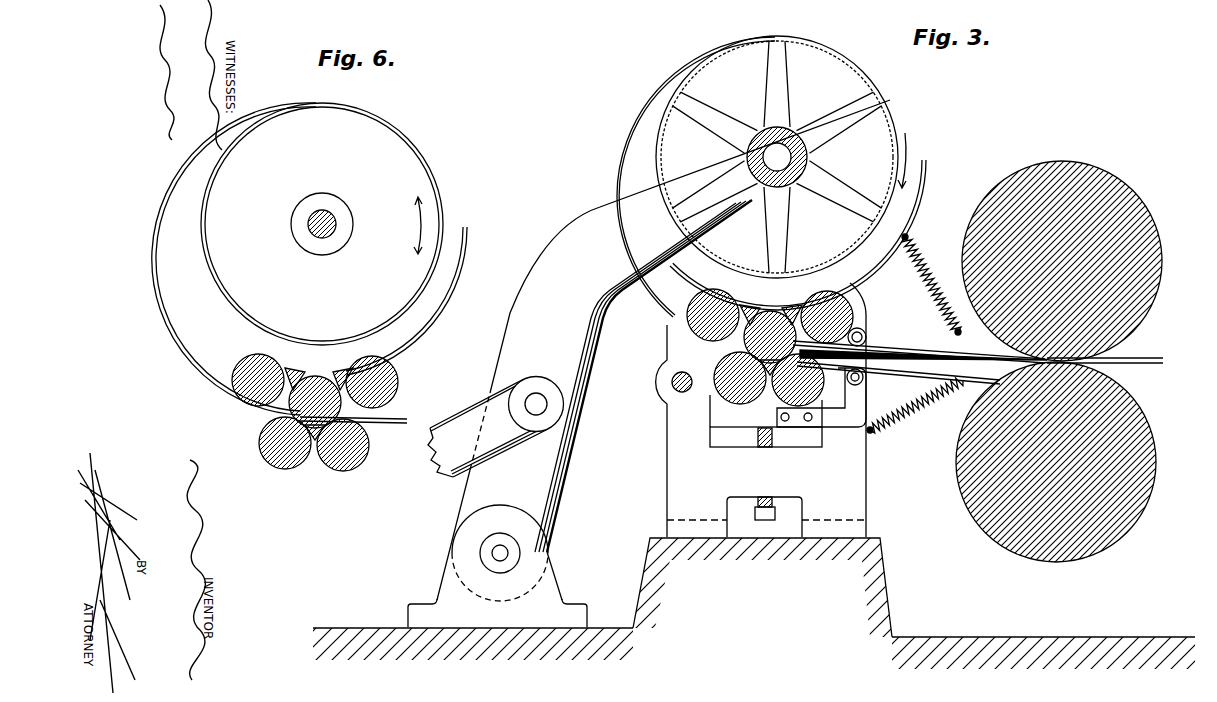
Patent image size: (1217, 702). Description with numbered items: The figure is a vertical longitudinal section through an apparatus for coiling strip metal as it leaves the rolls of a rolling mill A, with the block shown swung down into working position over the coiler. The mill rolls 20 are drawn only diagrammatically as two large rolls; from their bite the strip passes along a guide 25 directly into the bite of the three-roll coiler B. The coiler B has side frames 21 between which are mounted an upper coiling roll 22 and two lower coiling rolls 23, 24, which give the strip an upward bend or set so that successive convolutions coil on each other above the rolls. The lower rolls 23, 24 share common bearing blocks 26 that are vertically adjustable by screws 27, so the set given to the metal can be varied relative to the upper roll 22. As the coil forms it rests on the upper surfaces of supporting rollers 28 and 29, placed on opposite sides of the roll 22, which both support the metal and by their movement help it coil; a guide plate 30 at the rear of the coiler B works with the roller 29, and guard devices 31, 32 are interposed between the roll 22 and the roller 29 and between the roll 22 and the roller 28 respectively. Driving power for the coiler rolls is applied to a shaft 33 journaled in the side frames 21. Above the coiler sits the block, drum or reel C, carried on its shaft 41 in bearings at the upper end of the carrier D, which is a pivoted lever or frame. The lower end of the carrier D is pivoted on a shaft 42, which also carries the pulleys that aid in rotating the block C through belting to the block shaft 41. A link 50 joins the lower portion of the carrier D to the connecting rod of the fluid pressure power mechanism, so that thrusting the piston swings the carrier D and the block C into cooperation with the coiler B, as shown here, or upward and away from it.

In FIG. 3, the rolls 20 is at (1152, 262).
In FIG. 3, the side frames 21 is at (660, 497).
In FIG. 6, the upper coiling roll 22 is at (307, 404).
In FIG. 3, the upper coiling roll 22 is at (757, 338).
In FIG. 6, the lower coiling roll 23 is at (270, 456).
In FIG. 3, the lower coiling roll 23 is at (725, 395).
In FIG. 6, the lower coiling roll 24 is at (357, 462).
In FIG. 3, the lower coiling roll 24 is at (780, 402).
In FIG. 3, the guide 25 is at (882, 344).
In FIG. 3, the bearing blocks 26 is at (733, 420).
In FIG. 3, the adjusting screws 27 is at (752, 504).
In FIG. 6, the supporting roller 28 is at (247, 370).
In FIG. 3, the supporting roller 28 is at (710, 300).
In FIG. 6, the supporting roller 29 is at (383, 373).
In FIG. 3, the supporting roller 29 is at (822, 302).
In FIG. 6, the guide plate 30 is at (466, 272).
In FIG. 3, the guide plate 30 is at (927, 186).
In FIG. 6, the guard device 31 is at (338, 375).
In FIG. 3, the guard device 31 is at (790, 312).
In FIG. 6, the guard device 32 is at (293, 370).
In FIG. 3, the guard device 32 is at (750, 310).
In FIG. 3, the drive shaft 33 is at (672, 382).
In FIG. 6, the block shaft 41 is at (341, 221).
In FIG. 3, the block shaft 41 is at (806, 157).
In FIG. 3, the pivot shaft 42 is at (497, 557).
In FIG. 3, the link 50 is at (452, 453).
In FIG. 3, the rolling mill A is at (1078, 361).
In FIG. 3, the three-roll coiler B is at (761, 410).
In FIG. 6, the block C is at (322, 224).
In FIG. 3, the block C is at (758, 176).
In FIG. 3, the carrier D is at (663, 350).